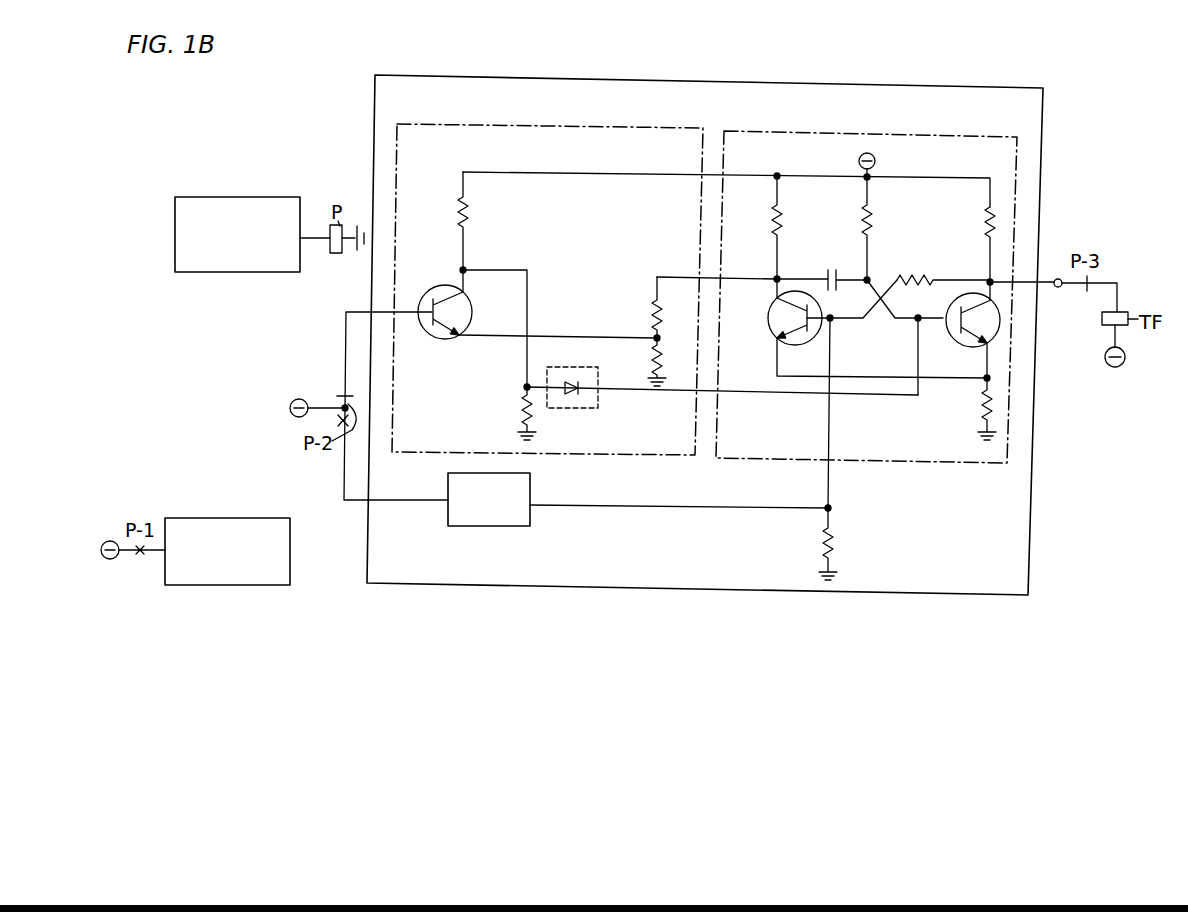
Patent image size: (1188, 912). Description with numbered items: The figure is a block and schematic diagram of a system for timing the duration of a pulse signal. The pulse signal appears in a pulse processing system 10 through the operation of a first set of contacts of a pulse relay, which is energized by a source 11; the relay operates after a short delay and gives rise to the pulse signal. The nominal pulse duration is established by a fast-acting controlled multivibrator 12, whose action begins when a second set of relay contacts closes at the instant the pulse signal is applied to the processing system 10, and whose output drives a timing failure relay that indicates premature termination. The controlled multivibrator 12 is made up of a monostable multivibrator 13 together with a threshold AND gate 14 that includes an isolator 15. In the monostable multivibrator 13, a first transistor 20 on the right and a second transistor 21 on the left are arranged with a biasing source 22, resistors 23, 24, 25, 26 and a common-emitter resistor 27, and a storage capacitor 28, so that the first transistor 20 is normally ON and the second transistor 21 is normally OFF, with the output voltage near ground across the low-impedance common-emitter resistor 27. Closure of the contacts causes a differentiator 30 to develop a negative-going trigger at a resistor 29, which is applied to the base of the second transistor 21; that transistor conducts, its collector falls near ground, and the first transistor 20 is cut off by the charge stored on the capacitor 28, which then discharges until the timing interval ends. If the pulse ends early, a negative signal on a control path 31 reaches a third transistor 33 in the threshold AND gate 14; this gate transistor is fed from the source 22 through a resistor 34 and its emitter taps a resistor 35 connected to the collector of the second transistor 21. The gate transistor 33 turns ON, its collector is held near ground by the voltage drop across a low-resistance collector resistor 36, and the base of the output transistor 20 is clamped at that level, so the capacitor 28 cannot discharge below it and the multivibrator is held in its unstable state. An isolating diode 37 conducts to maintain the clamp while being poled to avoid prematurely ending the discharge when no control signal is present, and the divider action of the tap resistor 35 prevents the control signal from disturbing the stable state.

The pulse processing system 10 is at (292, 540).
The source 11 is at (290, 197).
The controlled multivibrator 12 is at (705, 326).
The monostable multivibrator 13 is at (866, 286).
The threshold AND gate 14 is at (547, 279).
The isolator 15 is at (547, 408).
The first transistor 20 is at (955, 343).
The second transistor 21 is at (780, 340).
The biasing source 22 is at (857, 163).
The resistor 23 is at (784, 222).
The resistor 24 is at (873, 222).
The resistor 25 is at (925, 274).
The resistor 26 is at (985, 222).
The common-emitter resistor 27 is at (978, 408).
The storage capacitor 28 is at (833, 270).
The resistor 29 is at (835, 540).
The differentiator 30 is at (531, 520).
The control path 31 is at (345, 323).
The third transistor 33 is at (432, 338).
The resistor 34 is at (468, 216).
The tap resistor 35 is at (655, 340).
The collector resistor 36 is at (517, 412).
The isolating diode 37 is at (592, 403).